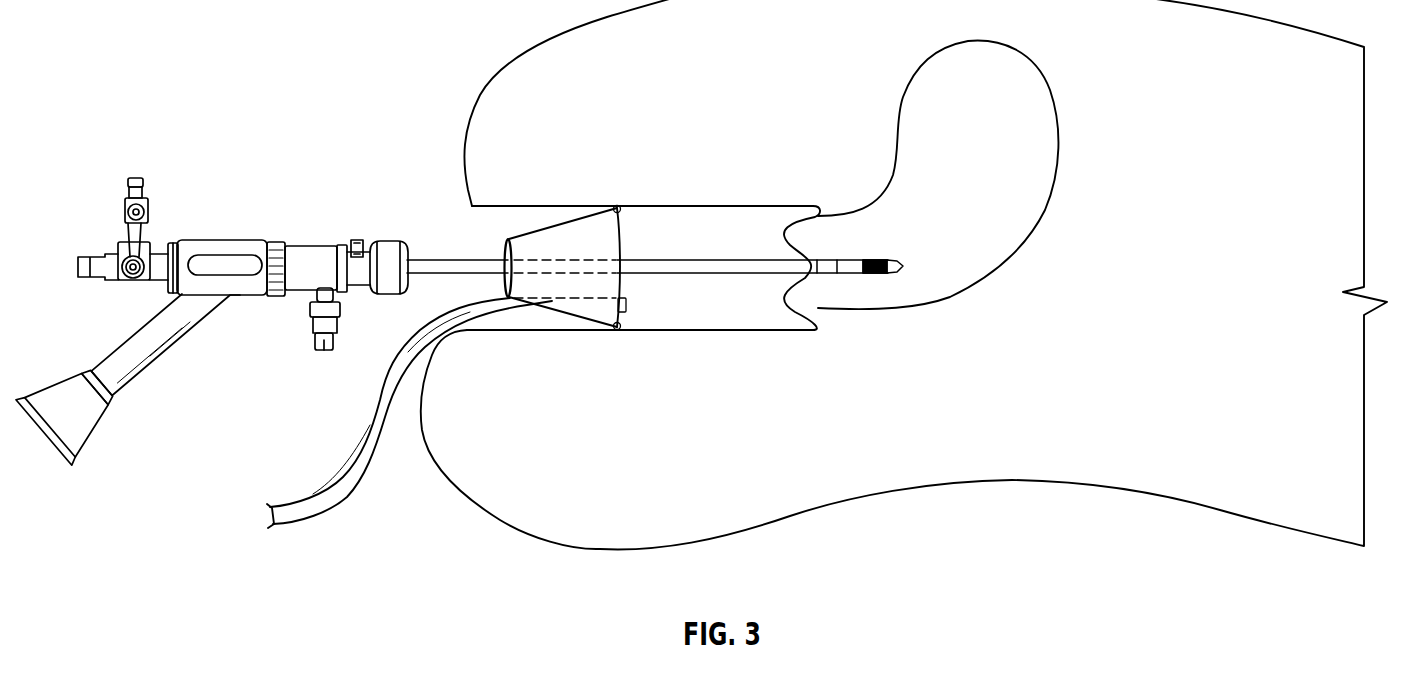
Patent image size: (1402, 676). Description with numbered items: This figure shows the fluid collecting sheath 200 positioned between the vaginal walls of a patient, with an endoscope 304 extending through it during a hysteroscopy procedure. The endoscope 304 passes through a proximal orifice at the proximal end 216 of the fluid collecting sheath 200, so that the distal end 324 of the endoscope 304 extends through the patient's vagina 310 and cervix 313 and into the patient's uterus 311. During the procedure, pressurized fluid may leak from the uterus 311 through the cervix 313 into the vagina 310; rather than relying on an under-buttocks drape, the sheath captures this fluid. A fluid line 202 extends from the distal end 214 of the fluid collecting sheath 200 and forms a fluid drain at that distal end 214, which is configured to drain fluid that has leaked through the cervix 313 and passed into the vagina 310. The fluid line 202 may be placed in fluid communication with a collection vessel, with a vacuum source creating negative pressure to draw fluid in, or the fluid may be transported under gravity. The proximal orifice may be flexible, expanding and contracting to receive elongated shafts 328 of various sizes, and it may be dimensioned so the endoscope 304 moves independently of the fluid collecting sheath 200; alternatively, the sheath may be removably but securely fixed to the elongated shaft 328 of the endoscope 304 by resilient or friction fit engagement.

The fluid collecting sheath 200 is at (530, 216).
The fluid line 202 is at (327, 505).
The distal end of the fluid collecting sheath 214 is at (623, 283).
The proximal end of the fluid collecting sheath 216 is at (504, 256).
The endoscope 304 is at (236, 214).
The vagina 310 is at (726, 210).
The uterus 311 is at (1036, 64).
The cervix 313 is at (782, 209).
The distal end of the endoscope 324 is at (888, 258).
The elongated shaft 328 is at (427, 259).